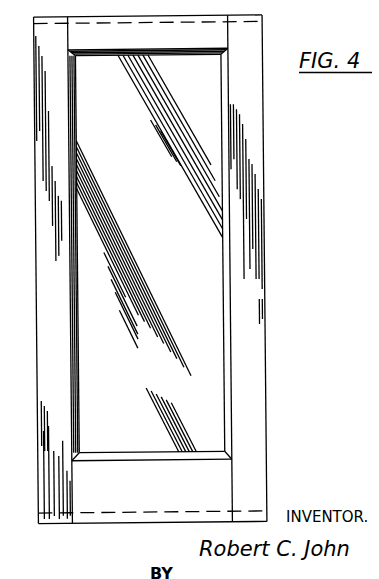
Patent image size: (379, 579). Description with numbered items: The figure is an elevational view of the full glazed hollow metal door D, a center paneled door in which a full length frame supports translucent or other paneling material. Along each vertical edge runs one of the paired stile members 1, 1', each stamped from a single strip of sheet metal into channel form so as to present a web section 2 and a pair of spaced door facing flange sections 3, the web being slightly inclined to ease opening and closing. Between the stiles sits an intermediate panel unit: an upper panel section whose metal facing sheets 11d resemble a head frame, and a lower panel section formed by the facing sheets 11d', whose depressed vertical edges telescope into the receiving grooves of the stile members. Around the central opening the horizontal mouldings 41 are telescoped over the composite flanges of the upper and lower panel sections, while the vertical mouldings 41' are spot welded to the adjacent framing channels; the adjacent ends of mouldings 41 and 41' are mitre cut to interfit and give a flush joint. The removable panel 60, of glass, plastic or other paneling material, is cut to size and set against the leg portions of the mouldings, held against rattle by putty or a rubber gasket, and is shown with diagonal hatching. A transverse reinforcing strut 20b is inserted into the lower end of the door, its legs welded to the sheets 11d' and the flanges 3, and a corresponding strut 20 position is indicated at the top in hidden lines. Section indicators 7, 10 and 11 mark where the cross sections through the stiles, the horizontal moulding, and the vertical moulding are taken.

The stile member 1 is at (134, 269).
The stile member 1' is at (263, 268).
The web section 2 is at (36, 330).
The door facing flange section 3 is at (150, 276).
The section line 7- 7 is at (82, 28).
The section line 10- 10 is at (135, 6).
The section line 11- 11 is at (97, 222).
The upper panel facing sheet 11d is at (148, 31).
The lower panel facing sheet 11d' is at (152, 498).
The hidden member 20 is at (270, 2).
The transverse reinforcing strut 20b is at (157, 514).
The horizontal moulding 41 is at (150, 254).
The vertical moulding 41' is at (147, 253).
The removable panel 60 is at (149, 253).
The full glazed door D is at (268, 410).